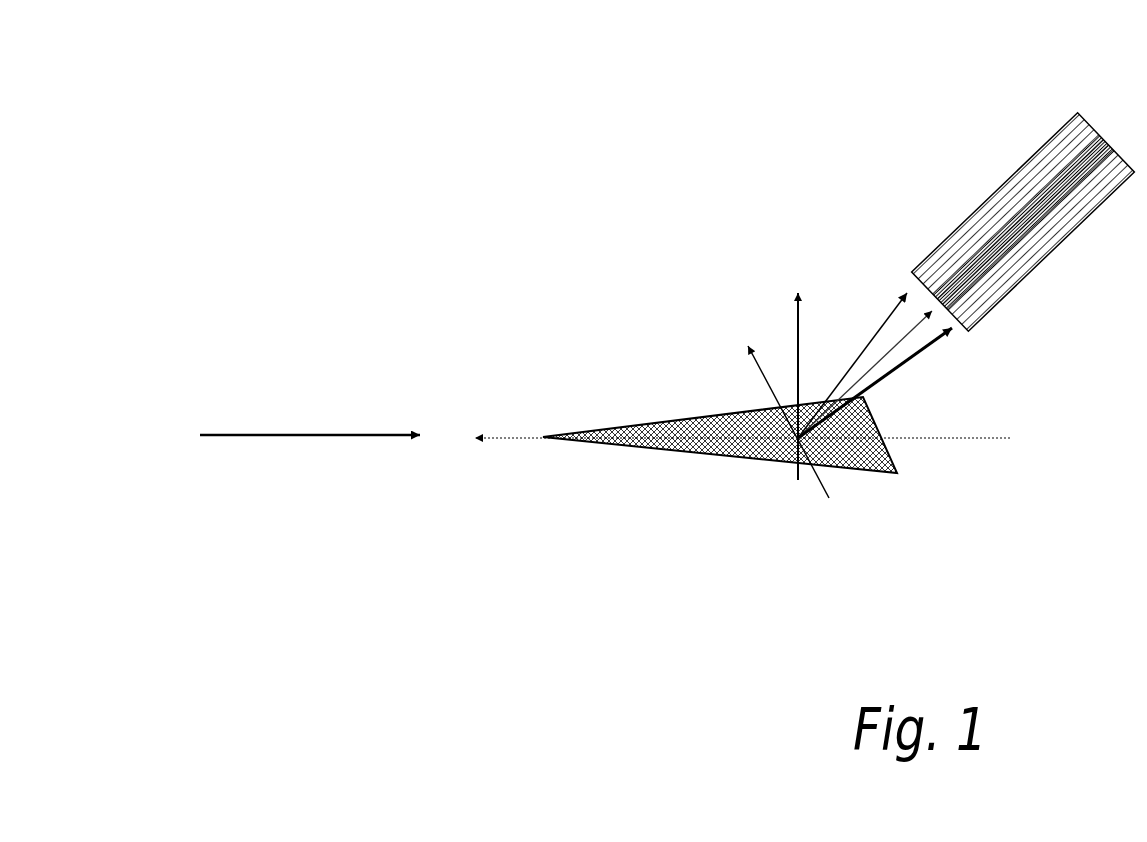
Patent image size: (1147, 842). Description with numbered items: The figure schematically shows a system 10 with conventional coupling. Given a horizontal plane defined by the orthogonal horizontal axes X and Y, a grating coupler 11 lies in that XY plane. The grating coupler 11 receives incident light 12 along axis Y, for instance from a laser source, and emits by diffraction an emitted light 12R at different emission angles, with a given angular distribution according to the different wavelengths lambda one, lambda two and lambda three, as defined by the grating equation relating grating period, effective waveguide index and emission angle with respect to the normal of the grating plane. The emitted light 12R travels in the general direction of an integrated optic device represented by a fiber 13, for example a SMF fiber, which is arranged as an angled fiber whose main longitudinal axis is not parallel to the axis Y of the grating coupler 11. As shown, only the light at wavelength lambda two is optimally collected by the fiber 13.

The system 10 is at (692, 198).
The grating coupler 11 is at (767, 460).
The incident light 12 is at (310, 402).
The emitted light 12R is at (905, 365).
The fiber 13 is at (1000, 182).